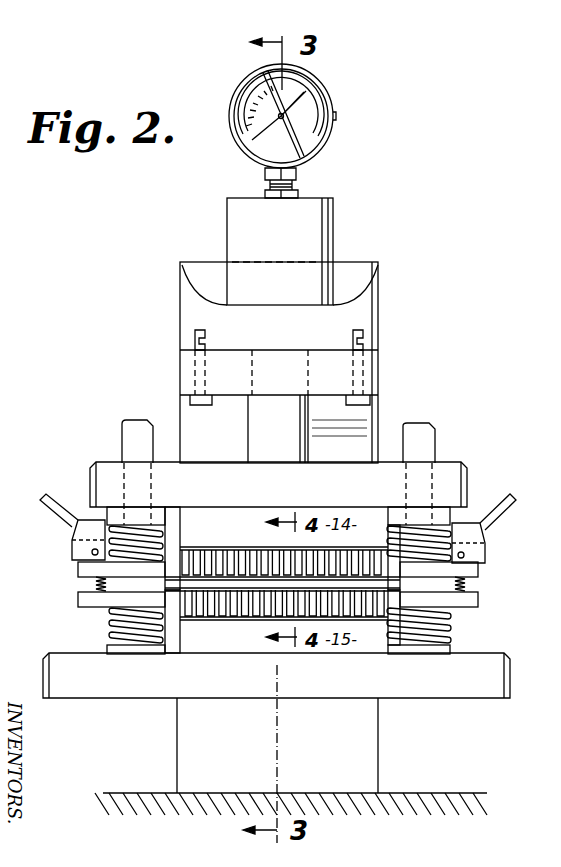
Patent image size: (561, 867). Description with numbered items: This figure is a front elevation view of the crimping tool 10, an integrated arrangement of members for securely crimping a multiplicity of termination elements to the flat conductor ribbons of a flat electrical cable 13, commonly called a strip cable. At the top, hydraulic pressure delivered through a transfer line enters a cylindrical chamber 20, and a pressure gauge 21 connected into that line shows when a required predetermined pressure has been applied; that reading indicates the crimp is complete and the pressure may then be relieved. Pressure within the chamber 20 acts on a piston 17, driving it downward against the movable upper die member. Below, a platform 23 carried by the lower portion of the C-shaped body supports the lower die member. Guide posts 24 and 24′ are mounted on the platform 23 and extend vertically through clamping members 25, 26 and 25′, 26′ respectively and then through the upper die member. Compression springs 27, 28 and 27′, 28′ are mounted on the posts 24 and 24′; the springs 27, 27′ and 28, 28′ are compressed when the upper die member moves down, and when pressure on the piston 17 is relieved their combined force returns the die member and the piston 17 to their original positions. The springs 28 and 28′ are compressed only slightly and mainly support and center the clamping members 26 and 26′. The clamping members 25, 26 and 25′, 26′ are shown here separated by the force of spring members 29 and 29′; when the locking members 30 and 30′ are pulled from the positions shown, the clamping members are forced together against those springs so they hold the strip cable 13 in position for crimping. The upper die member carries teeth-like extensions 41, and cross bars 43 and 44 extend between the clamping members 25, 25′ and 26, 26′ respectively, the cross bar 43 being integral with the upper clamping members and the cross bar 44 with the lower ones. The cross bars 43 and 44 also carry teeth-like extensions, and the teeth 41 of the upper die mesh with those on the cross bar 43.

The tool 10 is at (142, 370).
The flat electrical cable 13 is at (262, 592).
The piston 17 is at (255, 448).
The cylindrical chamber 20 is at (240, 214).
The pressure gauge 21 is at (333, 96).
The platform 23 is at (487, 692).
The guide post 24 is at (437, 434).
The guide post 24′ is at (122, 432).
The clamping member 25 is at (480, 568).
The clamping member 25′ is at (80, 563).
The clamping member 26 is at (480, 600).
The clamping member 26′ is at (80, 598).
The compression spring 27 is at (452, 538).
The compression spring 27′ is at (128, 535).
The compression spring 28 is at (450, 632).
The compression spring 28′ is at (114, 628).
The spring member 29 is at (468, 583).
The spring member 29′ is at (94, 583).
The locking member 30 is at (486, 545).
The locking member 30′ is at (74, 525).
The teeth-like extensions 41 is at (240, 546).
The cross bar 43 is at (172, 545).
The cross bar 44 is at (170, 640).